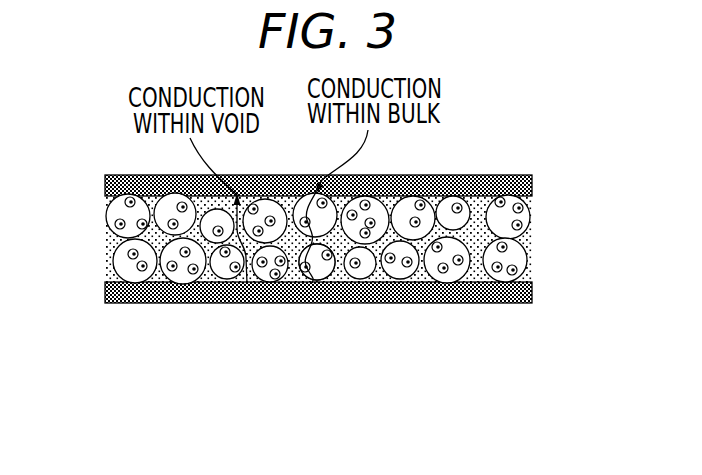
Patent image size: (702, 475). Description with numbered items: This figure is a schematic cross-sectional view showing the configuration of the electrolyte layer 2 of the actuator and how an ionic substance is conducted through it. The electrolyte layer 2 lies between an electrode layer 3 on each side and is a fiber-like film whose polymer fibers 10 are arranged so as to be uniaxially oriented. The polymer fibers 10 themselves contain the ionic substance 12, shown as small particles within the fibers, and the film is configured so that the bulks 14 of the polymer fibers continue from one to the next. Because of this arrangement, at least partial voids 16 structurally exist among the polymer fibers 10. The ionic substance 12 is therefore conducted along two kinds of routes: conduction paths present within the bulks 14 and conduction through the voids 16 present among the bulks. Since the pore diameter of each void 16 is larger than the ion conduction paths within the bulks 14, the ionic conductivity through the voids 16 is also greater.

The electrolyte layer 2 is at (553, 198).
The electrode layer 3 is at (107, 180).
The polymer fiber 10 is at (323, 277).
The ionic substance 12 is at (512, 270).
The bulk 14 is at (259, 283).
The void 16 is at (480, 236).